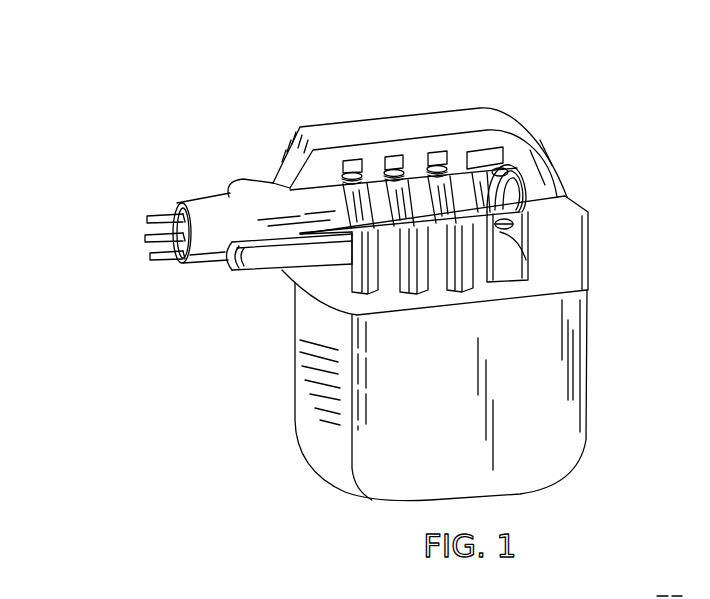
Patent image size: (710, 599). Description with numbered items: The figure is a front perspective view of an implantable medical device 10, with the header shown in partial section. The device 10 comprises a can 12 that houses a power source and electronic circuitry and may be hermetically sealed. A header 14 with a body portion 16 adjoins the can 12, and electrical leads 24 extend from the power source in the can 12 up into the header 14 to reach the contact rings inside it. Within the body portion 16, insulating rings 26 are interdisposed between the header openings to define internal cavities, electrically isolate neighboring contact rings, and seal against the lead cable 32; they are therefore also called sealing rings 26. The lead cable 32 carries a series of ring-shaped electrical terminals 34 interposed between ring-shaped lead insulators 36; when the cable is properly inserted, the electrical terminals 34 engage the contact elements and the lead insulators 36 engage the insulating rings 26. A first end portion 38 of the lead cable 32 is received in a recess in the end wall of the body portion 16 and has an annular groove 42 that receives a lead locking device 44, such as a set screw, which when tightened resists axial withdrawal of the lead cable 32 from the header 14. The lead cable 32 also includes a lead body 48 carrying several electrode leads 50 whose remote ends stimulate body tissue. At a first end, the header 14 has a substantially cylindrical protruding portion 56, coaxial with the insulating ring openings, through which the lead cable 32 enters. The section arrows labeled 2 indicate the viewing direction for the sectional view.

The section line for FIG. 2 is at (110, 243).
The implantable medical device 10 is at (165, 431).
The can 12 is at (575, 432).
The header 14 is at (497, 127).
The body portion 16 is at (580, 242).
The electrical leads 24 is at (457, 282).
The insulating rings 26 is at (358, 162).
The lead cable 32 is at (202, 217).
The electrical terminals 34 is at (350, 190).
The lead insulators 36 is at (381, 205).
The first end portion 38 is at (515, 183).
The annular groove 42 is at (493, 181).
The lead locking device 44 is at (507, 210).
The lead body 48 is at (204, 257).
The electrode leads 50 is at (147, 219).
The protruding portion 56 is at (268, 263).